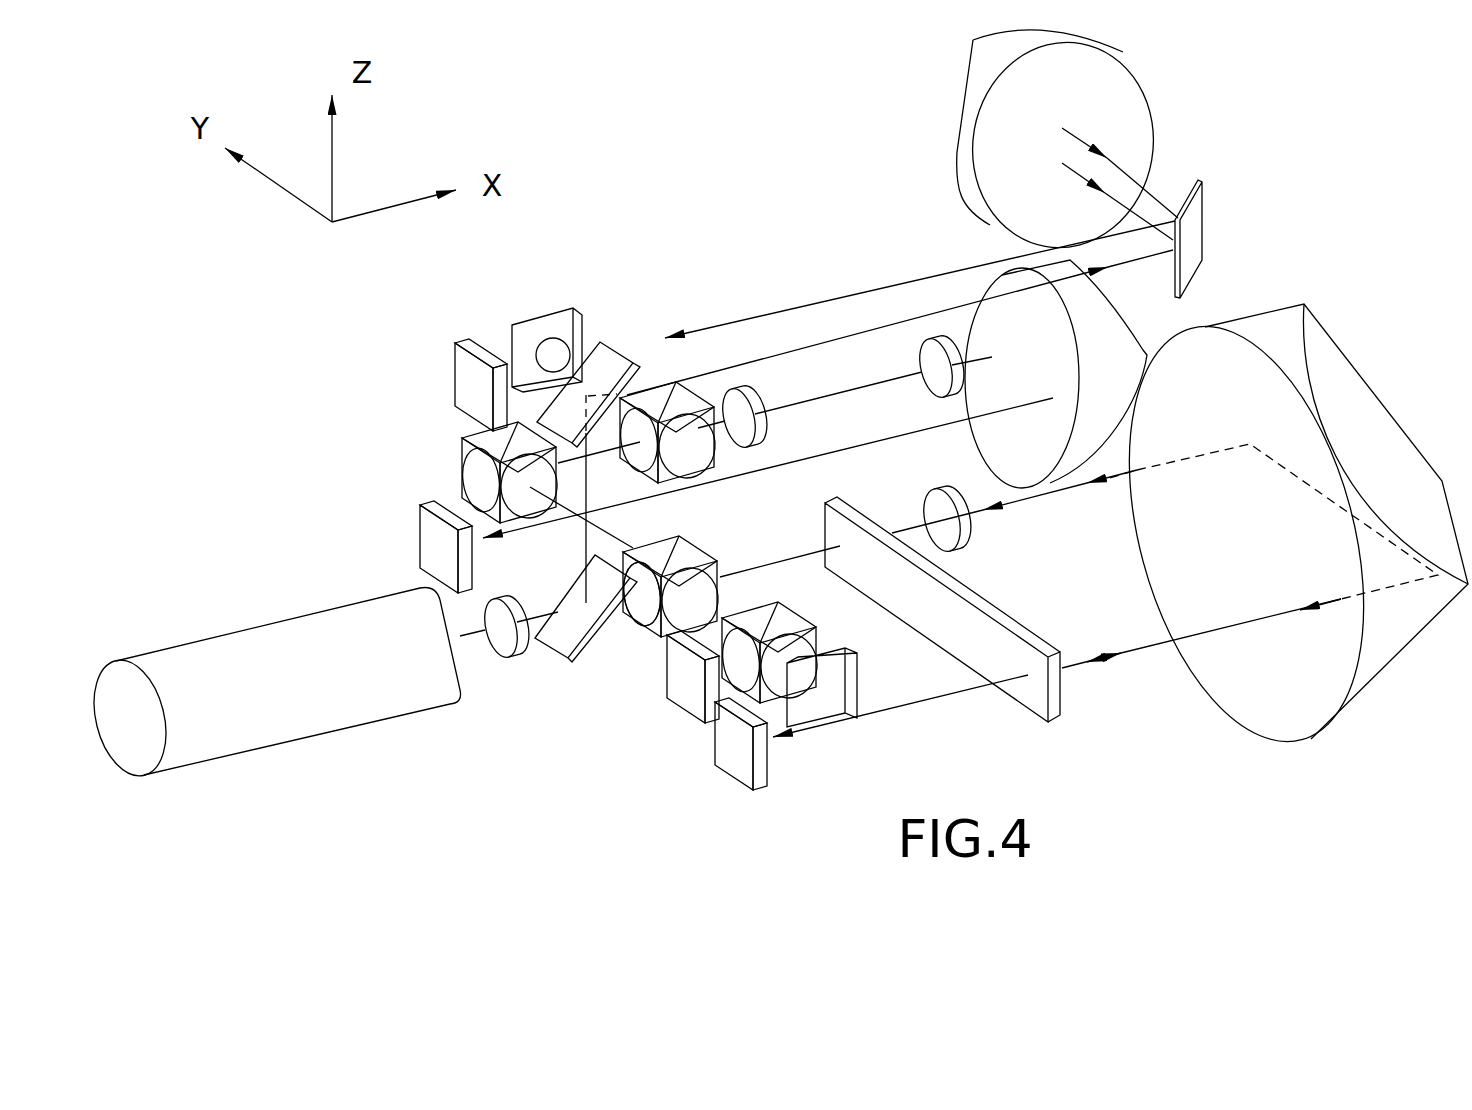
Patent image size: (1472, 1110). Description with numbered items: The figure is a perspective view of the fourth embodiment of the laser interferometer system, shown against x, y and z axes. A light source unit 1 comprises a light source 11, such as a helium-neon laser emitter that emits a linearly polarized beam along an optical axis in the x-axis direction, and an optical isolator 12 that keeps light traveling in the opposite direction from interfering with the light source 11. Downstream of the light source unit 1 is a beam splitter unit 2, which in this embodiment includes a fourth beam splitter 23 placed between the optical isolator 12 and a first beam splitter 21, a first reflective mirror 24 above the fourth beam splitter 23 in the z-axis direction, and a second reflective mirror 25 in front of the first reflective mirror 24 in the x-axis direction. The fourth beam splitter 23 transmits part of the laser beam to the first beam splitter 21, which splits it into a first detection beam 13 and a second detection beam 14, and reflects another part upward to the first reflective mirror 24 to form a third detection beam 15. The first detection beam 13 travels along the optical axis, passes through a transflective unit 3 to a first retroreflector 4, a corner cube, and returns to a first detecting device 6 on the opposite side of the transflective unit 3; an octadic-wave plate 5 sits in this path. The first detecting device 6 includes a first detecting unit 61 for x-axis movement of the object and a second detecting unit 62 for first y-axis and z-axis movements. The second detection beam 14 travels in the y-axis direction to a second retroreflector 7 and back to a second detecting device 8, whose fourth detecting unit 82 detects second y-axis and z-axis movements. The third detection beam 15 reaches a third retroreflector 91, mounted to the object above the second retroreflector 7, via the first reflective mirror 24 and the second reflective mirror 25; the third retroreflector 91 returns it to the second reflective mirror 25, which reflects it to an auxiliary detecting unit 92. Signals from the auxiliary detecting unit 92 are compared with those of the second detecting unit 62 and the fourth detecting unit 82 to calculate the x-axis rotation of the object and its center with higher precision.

The light source unit 1 is at (309, 654).
The light source 11 is at (243, 655).
The optical isolator 12 is at (505, 647).
The first detection beam 13 is at (762, 562).
The second detection beam 14 is at (663, 628).
The third detection beam 15 is at (580, 548).
The beam splitter unit 2 is at (570, 505).
The first beam splitter 21 is at (653, 637).
The fourth beam splitter 23 is at (560, 645).
The first reflective mirror 24 is at (600, 372).
The second reflective mirror 25 is at (1187, 220).
The transflective unit 3 is at (1047, 635).
The first retroreflector 4 is at (1371, 379).
The octadic-wave plate 5 is at (963, 532).
The first detecting device 6 is at (677, 767).
The first detecting unit 61 is at (687, 717).
The second detecting unit 62 is at (727, 778).
The second retroreflector 7 is at (1130, 325).
The second detecting device 8 is at (450, 455).
The fourth detecting unit 82 is at (420, 538).
The third retroreflector 91 is at (1158, 110).
The auxiliary detecting unit 92 is at (460, 372).